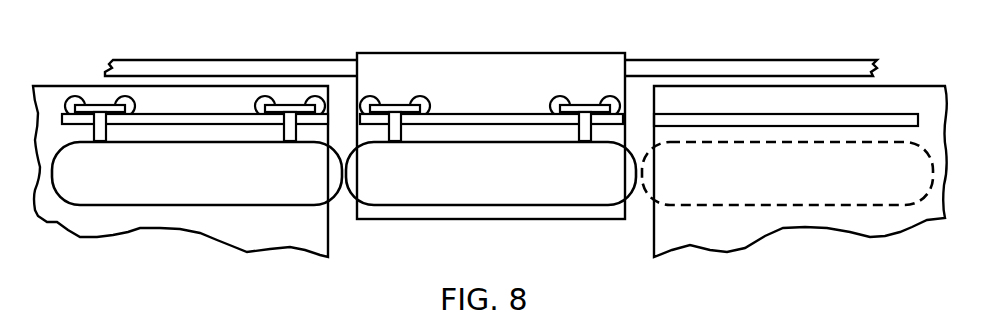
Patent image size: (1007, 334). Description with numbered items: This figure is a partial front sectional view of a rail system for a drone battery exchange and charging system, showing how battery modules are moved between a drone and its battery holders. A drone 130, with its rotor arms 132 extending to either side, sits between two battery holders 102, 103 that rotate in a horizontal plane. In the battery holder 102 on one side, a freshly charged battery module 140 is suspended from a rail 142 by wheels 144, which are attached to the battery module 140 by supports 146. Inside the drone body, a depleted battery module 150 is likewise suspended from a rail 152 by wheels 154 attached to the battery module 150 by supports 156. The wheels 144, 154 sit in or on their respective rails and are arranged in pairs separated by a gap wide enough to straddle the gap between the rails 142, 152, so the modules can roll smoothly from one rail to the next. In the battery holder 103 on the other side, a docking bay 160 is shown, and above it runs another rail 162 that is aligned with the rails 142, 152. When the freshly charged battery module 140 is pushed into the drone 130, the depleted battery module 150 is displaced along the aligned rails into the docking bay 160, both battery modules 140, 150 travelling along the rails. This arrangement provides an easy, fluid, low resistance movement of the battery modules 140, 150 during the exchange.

The battery holder 102 is at (107, 238).
The battery holder 103 is at (897, 85).
The drone 130 is at (387, 52).
The rotor arms 132 is at (300, 59).
The battery module 140 is at (138, 205).
The rail 142 is at (175, 124).
The wheels 144 is at (72, 97).
The supports 146 is at (100, 105).
The battery module 150 is at (568, 206).
The rail 152 is at (470, 124).
The wheels 154 is at (555, 102).
The supports 156 is at (597, 105).
The docking bay 160 is at (813, 205).
The rail 162 is at (842, 127).